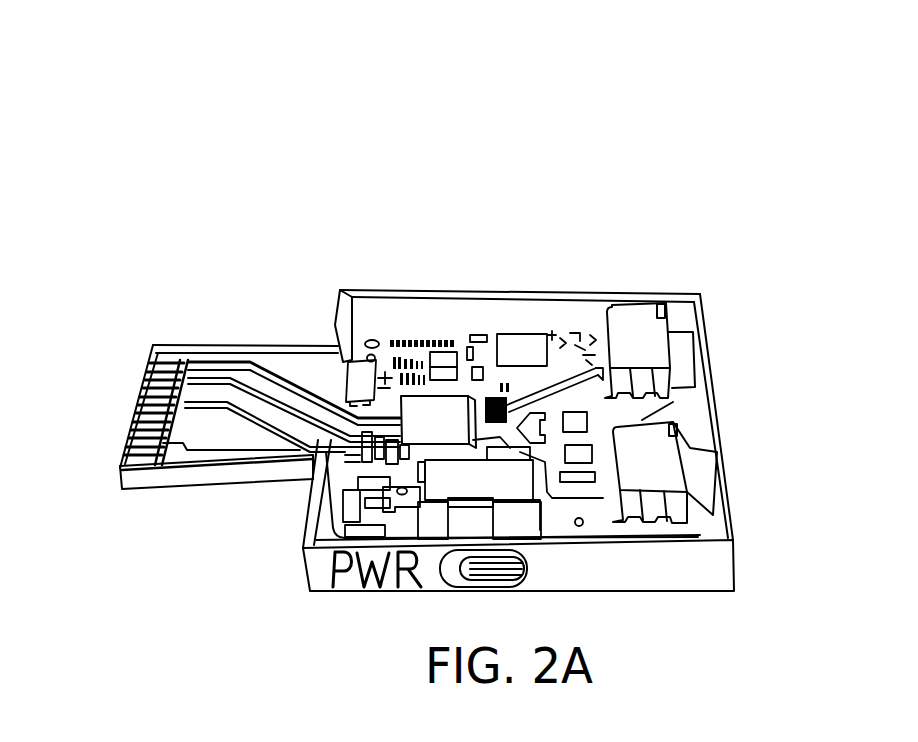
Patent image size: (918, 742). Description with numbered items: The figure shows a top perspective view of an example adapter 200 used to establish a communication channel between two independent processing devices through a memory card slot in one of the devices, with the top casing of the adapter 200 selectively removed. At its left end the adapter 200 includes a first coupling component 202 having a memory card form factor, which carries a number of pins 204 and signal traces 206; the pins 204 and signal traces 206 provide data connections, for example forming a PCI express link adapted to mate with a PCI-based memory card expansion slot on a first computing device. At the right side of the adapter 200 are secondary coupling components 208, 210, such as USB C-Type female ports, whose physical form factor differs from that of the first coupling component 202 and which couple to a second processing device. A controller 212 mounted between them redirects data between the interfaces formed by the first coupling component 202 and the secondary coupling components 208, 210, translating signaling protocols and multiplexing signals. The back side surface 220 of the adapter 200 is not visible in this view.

The adapter 200 is at (170, 96).
The first coupling component 202 is at (177, 480).
The pins 204 is at (215, 424).
The signal traces 206 is at (203, 370).
The secondary coupling component 208 is at (702, 350).
The secondary coupling component 210 is at (707, 462).
The controller 212 is at (453, 435).
The back side surface 220 is at (750, 537).